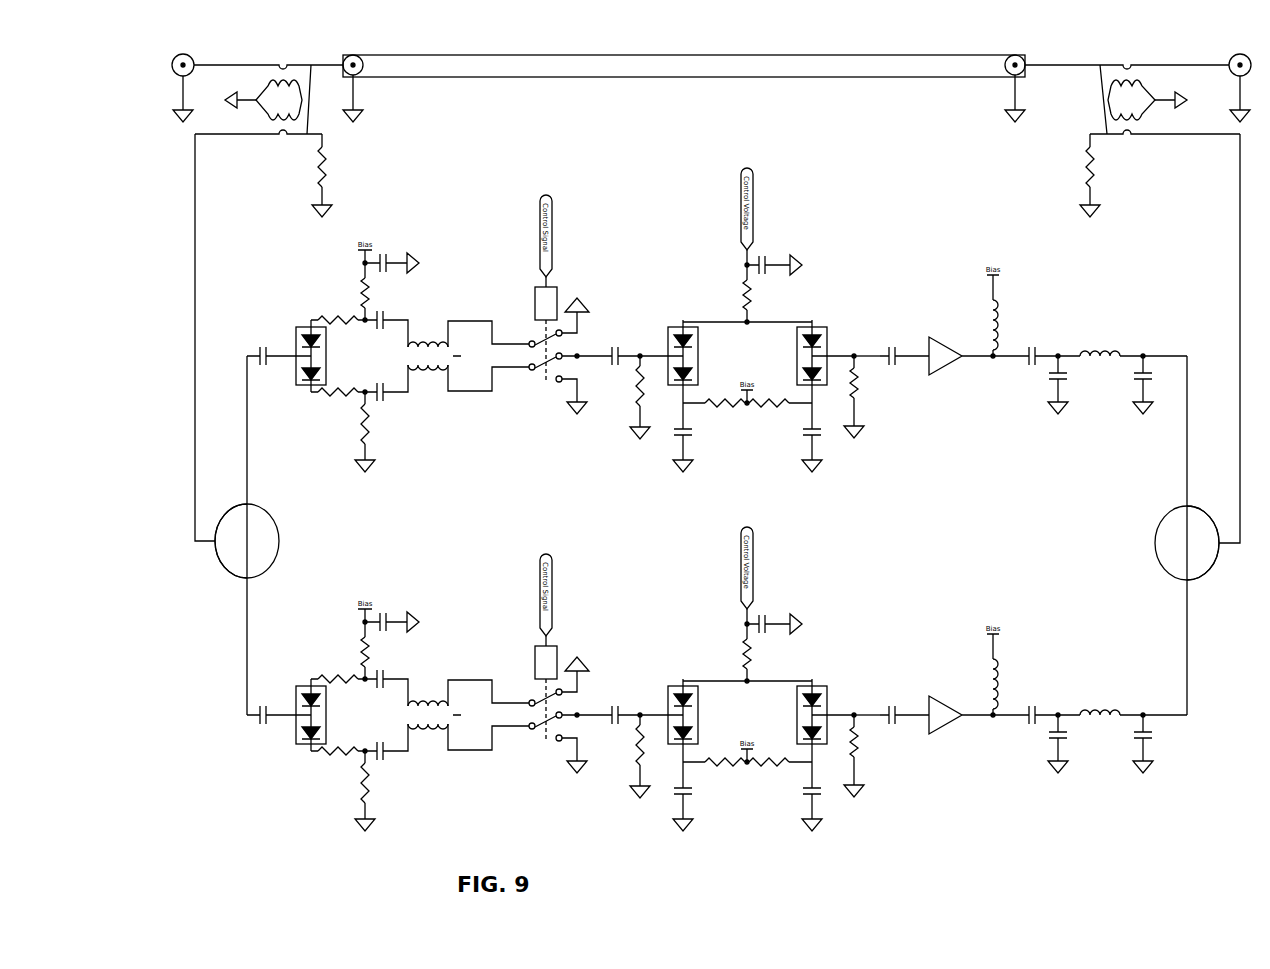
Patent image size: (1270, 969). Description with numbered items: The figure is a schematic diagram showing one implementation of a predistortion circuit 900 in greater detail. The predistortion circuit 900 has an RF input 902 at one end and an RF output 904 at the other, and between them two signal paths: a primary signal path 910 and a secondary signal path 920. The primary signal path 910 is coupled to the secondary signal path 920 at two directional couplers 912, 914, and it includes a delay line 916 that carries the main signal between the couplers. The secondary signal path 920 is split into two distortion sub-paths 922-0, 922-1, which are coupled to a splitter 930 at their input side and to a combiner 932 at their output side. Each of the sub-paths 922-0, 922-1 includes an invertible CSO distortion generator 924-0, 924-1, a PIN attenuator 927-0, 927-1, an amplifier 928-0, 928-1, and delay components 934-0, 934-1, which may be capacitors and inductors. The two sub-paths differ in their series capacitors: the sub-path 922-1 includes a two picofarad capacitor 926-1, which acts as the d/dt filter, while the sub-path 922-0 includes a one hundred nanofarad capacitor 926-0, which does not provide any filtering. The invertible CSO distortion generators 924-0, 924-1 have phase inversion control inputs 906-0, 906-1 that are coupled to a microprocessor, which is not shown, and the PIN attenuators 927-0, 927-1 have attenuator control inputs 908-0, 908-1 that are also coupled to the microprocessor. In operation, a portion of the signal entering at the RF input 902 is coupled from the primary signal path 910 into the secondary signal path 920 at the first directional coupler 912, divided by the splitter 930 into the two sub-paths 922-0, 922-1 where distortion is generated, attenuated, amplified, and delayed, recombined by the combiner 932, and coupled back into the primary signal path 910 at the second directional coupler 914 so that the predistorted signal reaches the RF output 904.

The predistortion circuit 900 is at (510, 160).
The RF input 902 is at (200, 55).
The RF output 904 is at (1222, 60).
The phase inversion control input 906-0 is at (553, 197).
The phase inversion control input 906-1 is at (553, 557).
The attenuator control input 908-0 is at (753, 225).
The attenuator control input 908-1 is at (753, 560).
The primary signal path 910 is at (132, 132).
The directional coupler 912 is at (242, 160).
The directional coupler 914 is at (1057, 153).
The delay line 916 is at (630, 78).
The secondary signal path 920 is at (152, 338).
The distortion sub-path 922-0 is at (283, 303).
The distortion sub-path 922-1 is at (258, 772).
The invertible CSO distortion generator 924-0 is at (462, 290).
The invertible CSO distortion generator 924-1 is at (447, 633).
The 100 nF capacitor 926-0 is at (905, 375).
The 2 pF capacitor 926-1 is at (897, 735).
The PIN attenuator 927-0 is at (822, 300).
The PIN attenuator 927-1 is at (847, 658).
The amplifier 928-0 is at (935, 338).
The amplifier 928-1 is at (942, 697).
The splitter 930 is at (278, 525).
The combiner 932 is at (1154, 548).
The delay component 934-0 is at (1100, 330).
The delay component 934-1 is at (1097, 687).